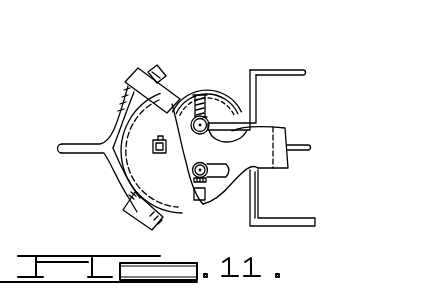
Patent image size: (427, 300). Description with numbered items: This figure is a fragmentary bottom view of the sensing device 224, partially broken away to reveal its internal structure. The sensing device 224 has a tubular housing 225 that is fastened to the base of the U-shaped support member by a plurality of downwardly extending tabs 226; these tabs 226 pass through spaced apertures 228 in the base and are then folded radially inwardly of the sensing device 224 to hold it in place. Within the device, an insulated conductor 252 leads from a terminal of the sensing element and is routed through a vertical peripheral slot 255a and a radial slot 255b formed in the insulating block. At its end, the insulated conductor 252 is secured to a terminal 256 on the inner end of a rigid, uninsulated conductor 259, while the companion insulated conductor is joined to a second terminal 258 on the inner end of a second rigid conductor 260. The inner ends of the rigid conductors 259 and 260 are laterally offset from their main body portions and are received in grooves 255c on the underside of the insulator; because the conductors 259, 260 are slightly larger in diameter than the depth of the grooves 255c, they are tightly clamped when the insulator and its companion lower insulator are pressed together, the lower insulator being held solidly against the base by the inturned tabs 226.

The sensing device 224 is at (224, 55).
The tubular housing 225 is at (158, 73).
The tabs 226 is at (166, 146).
The apertures 228 is at (124, 172).
The insulated conductor 252 is at (206, 96).
The vertical peripheral slots 255a is at (197, 96).
The radial slots 255b is at (207, 113).
The grooves 255c is at (205, 141).
The terminal 256 is at (210, 120).
The terminal 258 is at (186, 178).
The rigid conductor 259 is at (323, 56).
The rigid conductor 260 is at (305, 219).